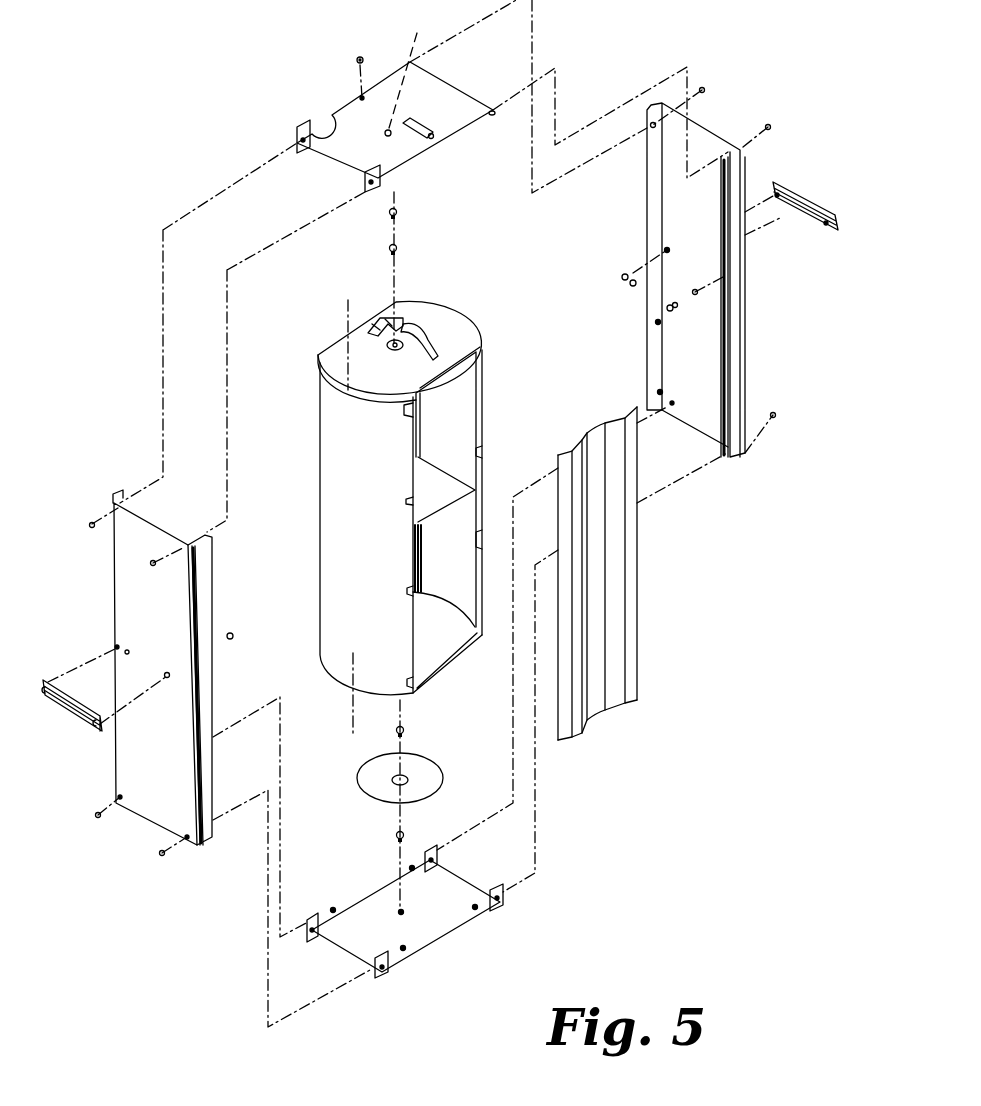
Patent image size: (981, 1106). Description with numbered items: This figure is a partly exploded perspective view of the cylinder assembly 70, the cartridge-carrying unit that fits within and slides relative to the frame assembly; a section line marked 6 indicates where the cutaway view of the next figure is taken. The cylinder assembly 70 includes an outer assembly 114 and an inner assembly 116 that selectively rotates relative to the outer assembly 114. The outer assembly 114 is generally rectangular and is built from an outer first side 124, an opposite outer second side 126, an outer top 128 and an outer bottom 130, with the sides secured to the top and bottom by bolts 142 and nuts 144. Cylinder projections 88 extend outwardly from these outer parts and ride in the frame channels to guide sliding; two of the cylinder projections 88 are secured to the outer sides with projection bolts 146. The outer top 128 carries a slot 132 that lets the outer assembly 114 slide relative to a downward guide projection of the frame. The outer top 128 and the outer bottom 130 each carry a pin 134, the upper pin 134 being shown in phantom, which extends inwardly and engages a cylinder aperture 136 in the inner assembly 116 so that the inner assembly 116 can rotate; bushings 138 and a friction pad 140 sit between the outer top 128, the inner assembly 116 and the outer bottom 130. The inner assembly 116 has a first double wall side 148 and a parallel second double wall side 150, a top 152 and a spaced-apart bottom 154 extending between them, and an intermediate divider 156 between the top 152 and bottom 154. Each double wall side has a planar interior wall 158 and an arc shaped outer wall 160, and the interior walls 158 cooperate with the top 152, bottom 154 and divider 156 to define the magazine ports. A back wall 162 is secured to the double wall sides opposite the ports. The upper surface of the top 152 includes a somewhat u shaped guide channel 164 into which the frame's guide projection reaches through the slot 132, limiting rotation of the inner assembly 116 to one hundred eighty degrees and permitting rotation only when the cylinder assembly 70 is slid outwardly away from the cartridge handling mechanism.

The cylinder assembly 70 is at (645, 858).
The outer assembly 114 is at (273, 118).
The inner assembly 116 is at (484, 373).
The outer first side 124 is at (707, 128).
The outer second side 126 is at (128, 593).
The outer top 128 is at (342, 107).
The outer bottom 130 is at (477, 928).
The slot 132 is at (437, 132).
The pin 134 is at (436, 960).
The cylinder aperture 136 is at (420, 328).
The bushing 138 is at (390, 247).
The friction pad 140 is at (360, 793).
The bolt 142 is at (90, 523).
The nut 144 is at (327, 128).
The projection bolt 146 is at (233, 633).
The first double wall side 148 is at (320, 512).
The second double wall side 150 is at (483, 464).
The top 152 is at (412, 303).
The bottom 154 is at (447, 633).
The intermediate divider 156 is at (427, 483).
The interior wall 158 is at (440, 393).
The outer wall 160 is at (483, 395).
The back wall 162 is at (615, 593).
The guide channel 164 is at (422, 343).
The cylinder projection 88 is at (359, 57).
The section line 6- 6 is at (348, 297).